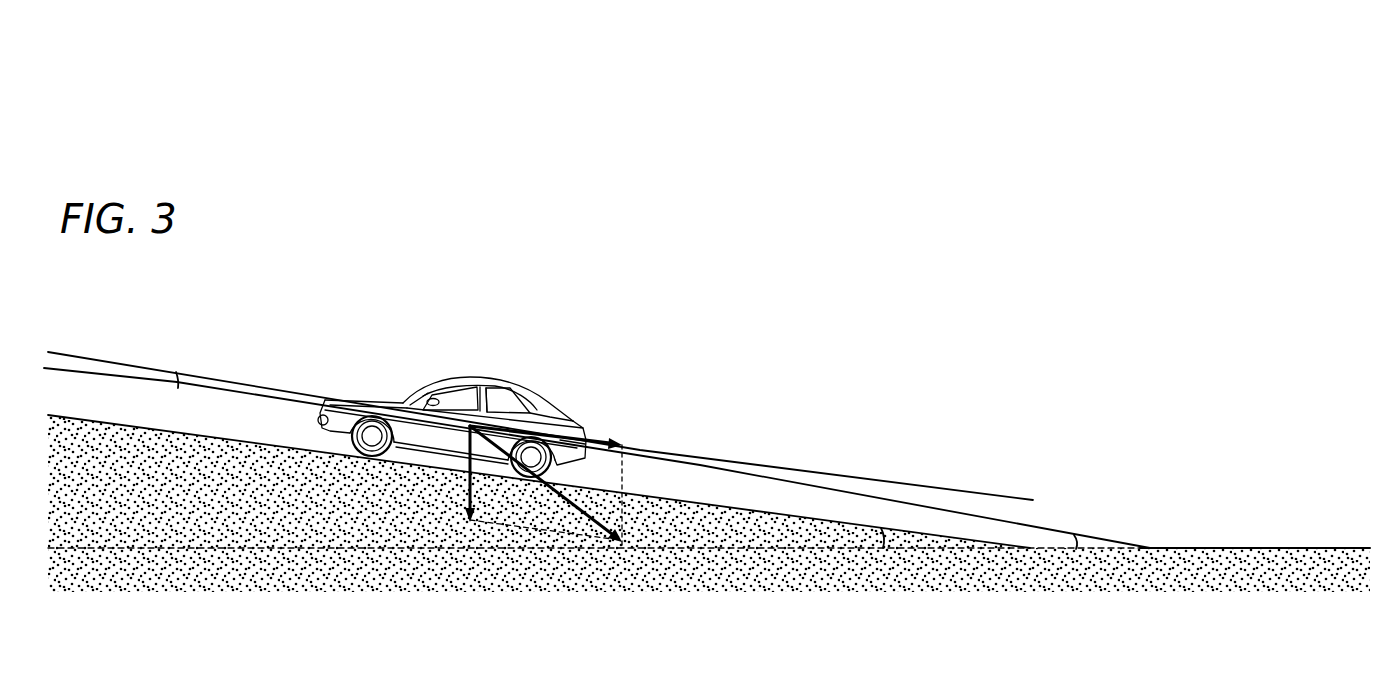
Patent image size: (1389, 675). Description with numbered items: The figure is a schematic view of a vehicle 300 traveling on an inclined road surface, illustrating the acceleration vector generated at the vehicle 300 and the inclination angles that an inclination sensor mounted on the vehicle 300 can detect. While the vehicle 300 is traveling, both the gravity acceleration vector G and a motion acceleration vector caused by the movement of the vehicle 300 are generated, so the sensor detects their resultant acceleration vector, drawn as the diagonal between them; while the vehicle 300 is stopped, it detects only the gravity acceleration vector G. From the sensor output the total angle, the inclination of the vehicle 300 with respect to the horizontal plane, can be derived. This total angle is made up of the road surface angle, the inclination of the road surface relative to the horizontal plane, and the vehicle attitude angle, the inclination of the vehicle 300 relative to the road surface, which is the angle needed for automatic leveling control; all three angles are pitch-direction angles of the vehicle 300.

The vehicle 300 is at (543, 398).
The gravity acceleration vector G is at (467, 478).